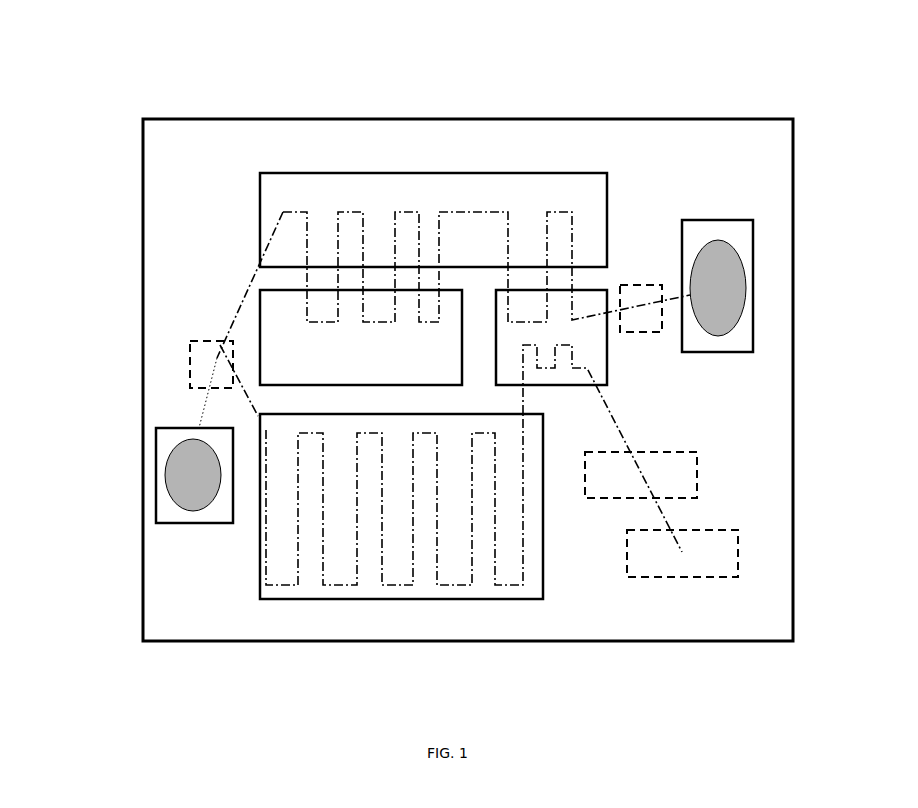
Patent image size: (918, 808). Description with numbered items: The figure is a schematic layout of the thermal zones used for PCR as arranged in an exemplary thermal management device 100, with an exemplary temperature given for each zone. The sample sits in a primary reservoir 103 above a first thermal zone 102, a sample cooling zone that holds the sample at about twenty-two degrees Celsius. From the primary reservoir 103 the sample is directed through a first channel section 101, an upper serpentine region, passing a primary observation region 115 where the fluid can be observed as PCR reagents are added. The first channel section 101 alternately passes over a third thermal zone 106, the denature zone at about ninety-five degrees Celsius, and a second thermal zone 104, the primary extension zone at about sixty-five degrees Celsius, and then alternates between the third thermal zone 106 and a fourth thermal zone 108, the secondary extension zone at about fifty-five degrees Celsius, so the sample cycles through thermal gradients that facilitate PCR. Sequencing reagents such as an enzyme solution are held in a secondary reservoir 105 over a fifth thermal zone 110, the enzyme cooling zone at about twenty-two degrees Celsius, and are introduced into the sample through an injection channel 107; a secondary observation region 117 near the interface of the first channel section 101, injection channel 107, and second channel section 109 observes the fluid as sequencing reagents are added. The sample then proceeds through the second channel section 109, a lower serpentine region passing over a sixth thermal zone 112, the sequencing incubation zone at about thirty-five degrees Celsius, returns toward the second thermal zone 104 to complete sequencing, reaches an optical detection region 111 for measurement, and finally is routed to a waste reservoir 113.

The thermal management device 100 is at (468, 380).
The first channel section 101 is at (573, 237).
The first thermal zone 102 is at (717, 218).
The primary reservoir 103 is at (718, 335).
The second thermal zone 104 is at (607, 340).
The secondary reservoir 105 is at (193, 507).
The third thermal zone 106 is at (433, 220).
The injection channel 107 is at (205, 392).
The fourth thermal zone 108 is at (361, 337).
The second channel section 109 is at (273, 588).
The fifth thermal zone 110 is at (195, 523).
The optical detection region 111 is at (697, 475).
The sixth thermal zone 112 is at (402, 600).
The waste reservoir 113 is at (682, 577).
The primary observation region 115 is at (638, 285).
The secondary observation region 117 is at (222, 342).